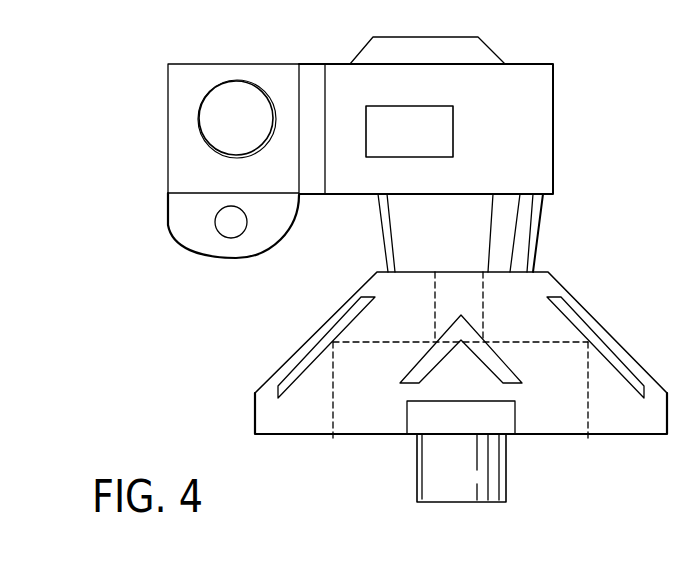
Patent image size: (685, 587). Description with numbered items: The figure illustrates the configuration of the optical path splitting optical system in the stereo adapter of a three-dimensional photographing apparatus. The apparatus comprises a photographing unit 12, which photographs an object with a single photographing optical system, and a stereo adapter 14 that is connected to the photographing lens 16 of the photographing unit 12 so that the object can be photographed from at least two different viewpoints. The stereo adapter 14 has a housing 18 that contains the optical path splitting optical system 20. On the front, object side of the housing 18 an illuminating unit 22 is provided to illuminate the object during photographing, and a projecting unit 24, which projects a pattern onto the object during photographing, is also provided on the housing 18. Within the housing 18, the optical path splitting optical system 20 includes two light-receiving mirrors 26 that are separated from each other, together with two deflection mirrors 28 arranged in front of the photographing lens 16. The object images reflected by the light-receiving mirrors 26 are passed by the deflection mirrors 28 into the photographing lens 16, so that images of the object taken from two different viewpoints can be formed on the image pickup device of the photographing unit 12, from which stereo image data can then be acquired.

The photographing unit 12 is at (187, 162).
The stereo adapter 14 is at (255, 428).
The photographing lens 16 is at (530, 213).
The housing 18 is at (255, 398).
The optical path splitting optical system 20 is at (525, 298).
The illuminating unit 22 is at (407, 420).
The projecting unit 24 is at (506, 460).
The light-receiving mirrors 26 is at (287, 365).
The deflection mirrors 28 is at (428, 354).